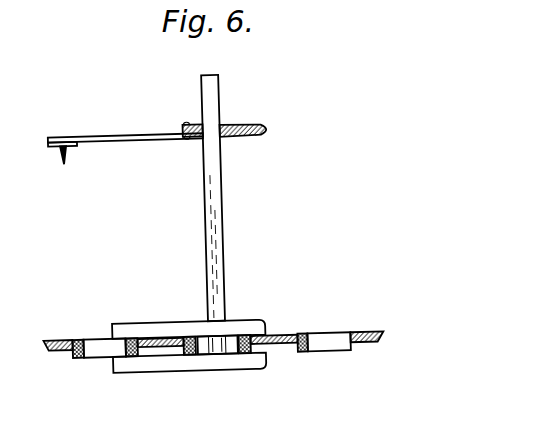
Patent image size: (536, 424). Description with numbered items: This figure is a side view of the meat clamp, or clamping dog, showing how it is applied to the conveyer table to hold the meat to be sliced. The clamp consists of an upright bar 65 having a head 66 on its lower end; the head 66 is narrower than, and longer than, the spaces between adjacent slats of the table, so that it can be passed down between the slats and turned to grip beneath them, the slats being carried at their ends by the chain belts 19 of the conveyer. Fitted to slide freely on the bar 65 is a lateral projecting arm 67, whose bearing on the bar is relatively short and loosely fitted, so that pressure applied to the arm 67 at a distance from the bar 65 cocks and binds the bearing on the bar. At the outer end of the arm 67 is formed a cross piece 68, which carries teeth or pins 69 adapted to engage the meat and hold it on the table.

The chain belt 19 is at (332, 338).
The bar 65 is at (228, 182).
The head 66 is at (257, 353).
The lateral projecting arm 67 is at (125, 134).
The cross piece 68 is at (55, 143).
The teeth or pins 69 is at (73, 154).